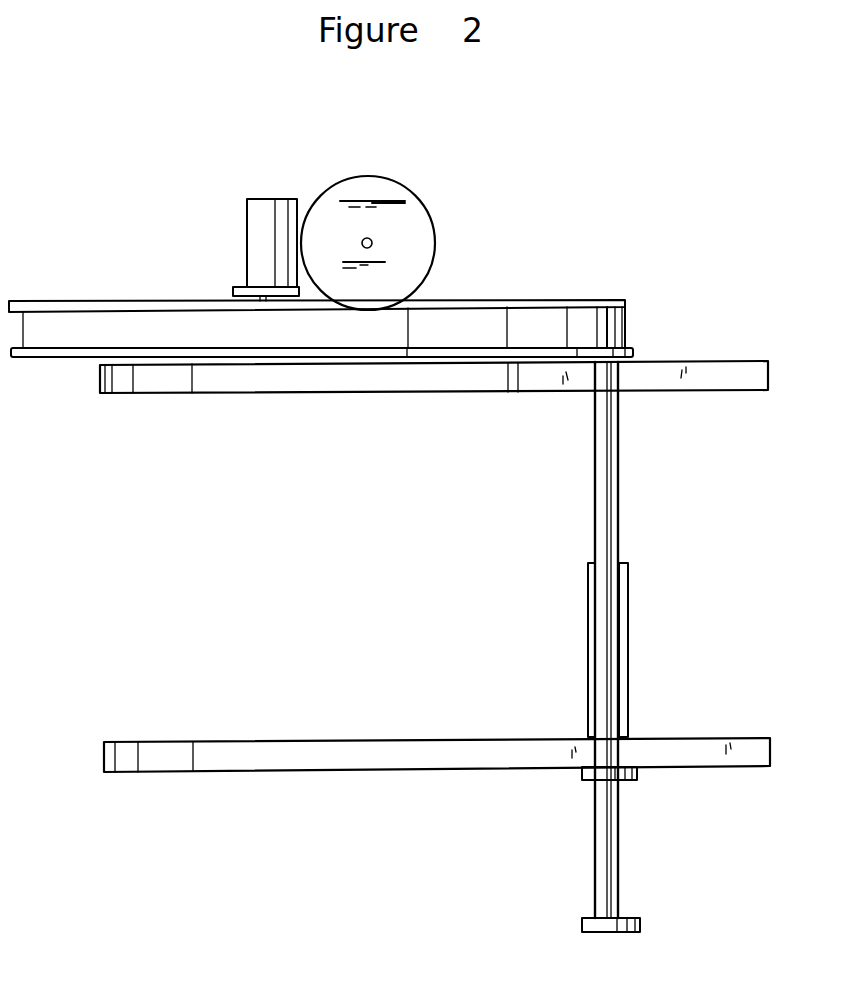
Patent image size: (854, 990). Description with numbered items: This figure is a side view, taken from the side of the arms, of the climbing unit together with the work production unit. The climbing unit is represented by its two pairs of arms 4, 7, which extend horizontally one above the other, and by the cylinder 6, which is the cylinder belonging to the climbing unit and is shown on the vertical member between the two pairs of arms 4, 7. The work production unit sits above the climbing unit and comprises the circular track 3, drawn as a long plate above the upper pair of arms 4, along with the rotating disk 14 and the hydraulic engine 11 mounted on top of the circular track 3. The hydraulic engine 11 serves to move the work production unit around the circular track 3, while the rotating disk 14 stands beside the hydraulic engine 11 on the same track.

The circular track 3 is at (108, 333).
The pair of arms 4 is at (717, 361).
The cylinder 6 is at (625, 570).
The pair of arms 7 is at (705, 738).
The hydraulic engine 11 is at (252, 217).
The rotating disk 14 is at (413, 212).